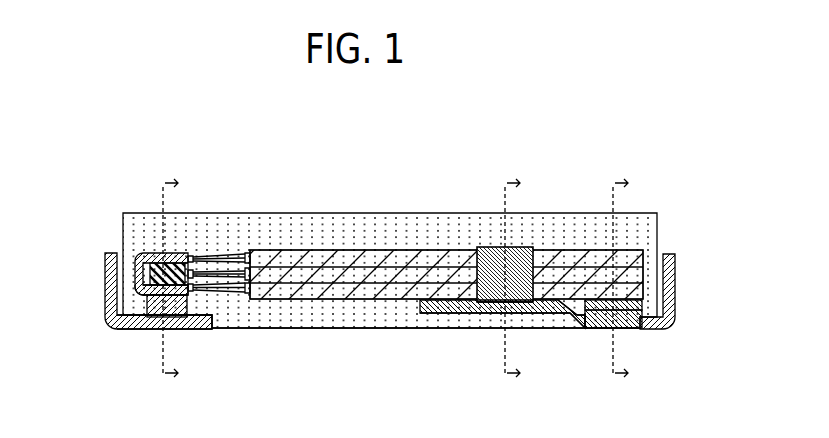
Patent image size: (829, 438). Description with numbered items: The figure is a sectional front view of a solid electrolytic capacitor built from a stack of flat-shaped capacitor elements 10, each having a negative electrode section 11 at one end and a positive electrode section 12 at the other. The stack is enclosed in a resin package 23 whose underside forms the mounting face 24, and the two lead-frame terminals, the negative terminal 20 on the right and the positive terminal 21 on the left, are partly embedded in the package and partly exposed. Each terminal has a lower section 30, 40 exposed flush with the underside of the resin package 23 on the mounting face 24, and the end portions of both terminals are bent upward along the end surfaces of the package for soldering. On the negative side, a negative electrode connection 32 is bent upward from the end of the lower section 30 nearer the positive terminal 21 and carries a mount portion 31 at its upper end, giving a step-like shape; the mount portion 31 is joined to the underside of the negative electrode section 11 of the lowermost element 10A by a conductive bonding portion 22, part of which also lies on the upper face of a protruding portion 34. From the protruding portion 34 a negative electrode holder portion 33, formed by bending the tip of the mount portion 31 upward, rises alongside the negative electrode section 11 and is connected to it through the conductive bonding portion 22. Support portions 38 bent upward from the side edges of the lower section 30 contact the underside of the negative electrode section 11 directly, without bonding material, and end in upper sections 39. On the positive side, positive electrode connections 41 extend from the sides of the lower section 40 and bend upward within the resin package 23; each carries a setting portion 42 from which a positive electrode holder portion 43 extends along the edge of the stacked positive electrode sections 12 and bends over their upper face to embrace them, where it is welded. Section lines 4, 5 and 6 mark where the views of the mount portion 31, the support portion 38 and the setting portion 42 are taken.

The capacitor element 10 is at (519, 227).
The element 10A is at (633, 297).
The negative electrode section 11 is at (335, 255).
The positive electrode section 12 is at (178, 255).
The negative terminal 20 is at (678, 263).
The positive terminal 21 is at (105, 272).
The conductive bonding portion 22 is at (427, 313).
The resin package 23 is at (260, 222).
The mounting face 24 is at (323, 328).
The lower section 30 is at (580, 327).
The mount portion 31 is at (460, 313).
The negative electrode connection 32 is at (563, 322).
The negative electrode holder portion 33 is at (532, 247).
The protruding portion 34 is at (495, 302).
The support portion 38 is at (622, 315).
The upper section 39 is at (642, 300).
The lower section 40 is at (203, 328).
The positive electrode connection 41 is at (143, 328).
The setting portion 42 is at (138, 292).
The positive electrode holder portion 43 is at (138, 260).
The line 4- 4 is at (510, 279).
The line 5- 5 is at (617, 279).
The line 6- 6 is at (167, 279).